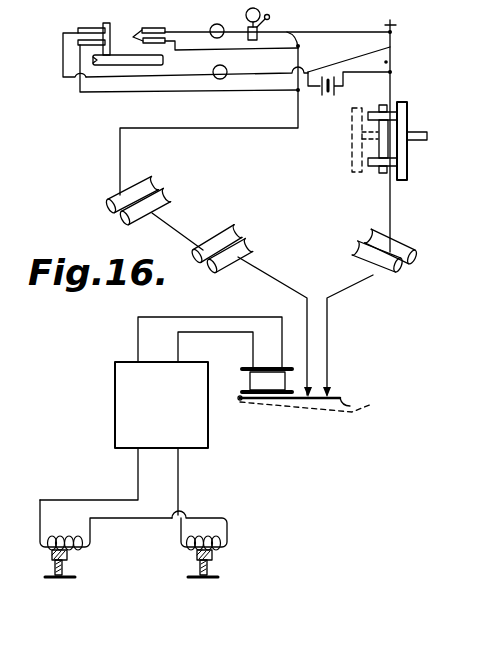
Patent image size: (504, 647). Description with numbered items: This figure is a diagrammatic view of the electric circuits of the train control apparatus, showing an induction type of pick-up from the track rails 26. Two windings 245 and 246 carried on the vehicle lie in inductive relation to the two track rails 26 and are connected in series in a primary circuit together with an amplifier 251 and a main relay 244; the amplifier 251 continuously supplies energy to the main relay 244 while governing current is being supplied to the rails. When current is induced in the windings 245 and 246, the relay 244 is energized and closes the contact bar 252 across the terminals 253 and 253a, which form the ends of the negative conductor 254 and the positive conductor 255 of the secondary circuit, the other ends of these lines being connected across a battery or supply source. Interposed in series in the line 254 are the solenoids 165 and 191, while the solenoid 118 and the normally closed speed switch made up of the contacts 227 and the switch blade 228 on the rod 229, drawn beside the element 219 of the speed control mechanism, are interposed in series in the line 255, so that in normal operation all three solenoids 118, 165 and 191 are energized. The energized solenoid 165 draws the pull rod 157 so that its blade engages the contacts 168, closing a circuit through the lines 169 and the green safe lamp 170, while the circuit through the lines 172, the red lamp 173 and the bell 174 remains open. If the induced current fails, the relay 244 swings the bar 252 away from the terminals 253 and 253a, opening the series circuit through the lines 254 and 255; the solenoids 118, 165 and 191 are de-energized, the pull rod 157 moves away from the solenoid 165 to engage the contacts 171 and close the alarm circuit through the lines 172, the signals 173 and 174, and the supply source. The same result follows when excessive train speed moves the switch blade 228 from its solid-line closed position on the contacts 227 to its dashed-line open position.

The pair of electrical contacts 168 is at (85, 28).
The electric circuit 169 is at (78, 54).
The pair of contacts 171 is at (133, 37).
The visible signal 173 is at (211, 30).
The audible signal 174 is at (270, 17).
The pull rod 157 is at (163, 61).
The electric circuit 172 is at (285, 52).
The signal means 170 is at (227, 75).
The positive conductor 255 is at (387, 62).
The switch blade 228 is at (378, 152).
The pair of contacts 227 is at (372, 110).
The plate 219 is at (407, 116).
The rod 229 is at (427, 134).
The negative conductor 254 is at (268, 128).
The solenoid 191 is at (113, 197).
The solenoid 165 is at (195, 260).
The solenoid 118 is at (404, 252).
The terminal 253 is at (310, 391).
The terminal 253a is at (329, 391).
The contact bar 252 is at (350, 406).
The main relay 244 is at (247, 382).
The amplifier 251 is at (128, 386).
The winding 245 is at (80, 514).
The winding 246 is at (232, 502).
The track rails 26 is at (56, 580).